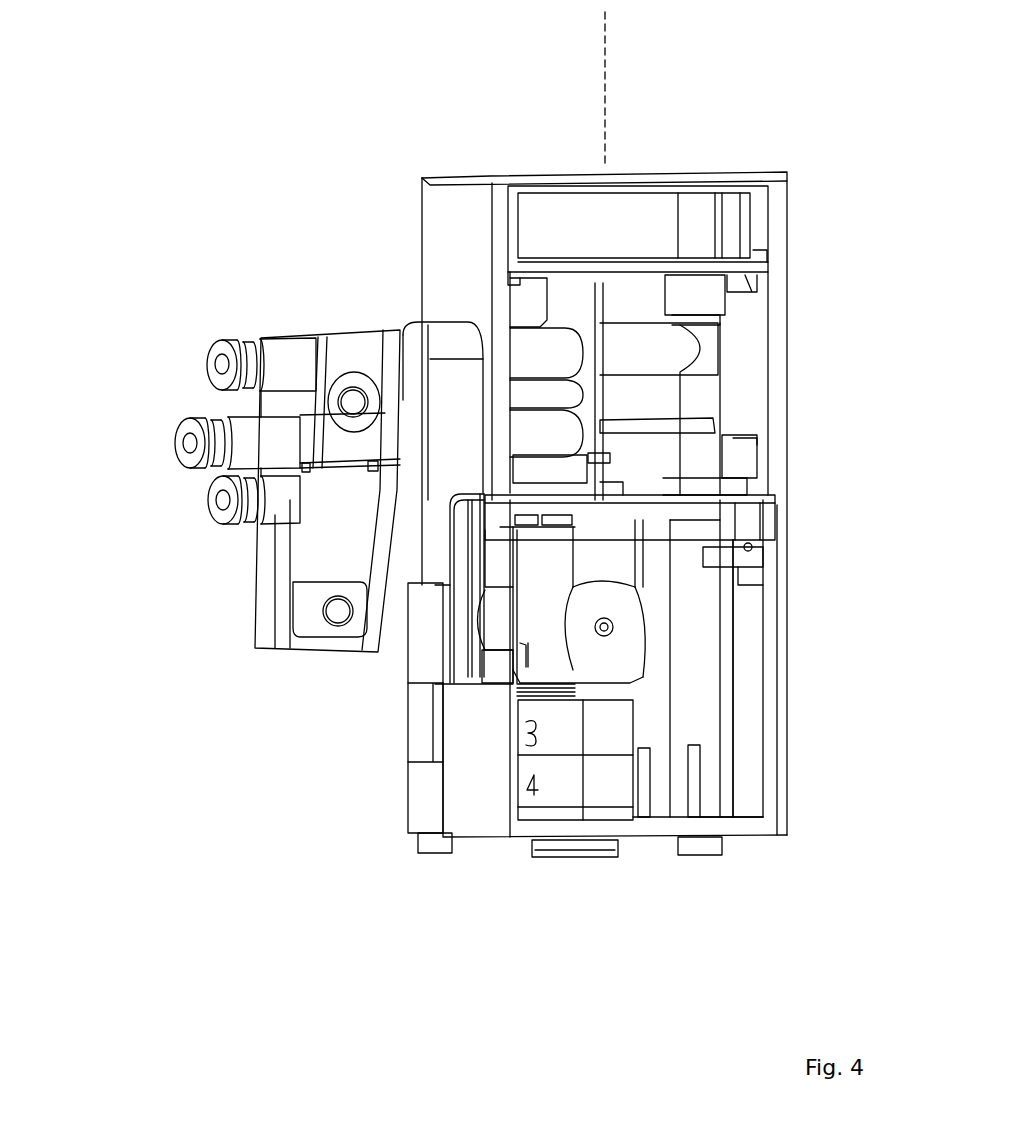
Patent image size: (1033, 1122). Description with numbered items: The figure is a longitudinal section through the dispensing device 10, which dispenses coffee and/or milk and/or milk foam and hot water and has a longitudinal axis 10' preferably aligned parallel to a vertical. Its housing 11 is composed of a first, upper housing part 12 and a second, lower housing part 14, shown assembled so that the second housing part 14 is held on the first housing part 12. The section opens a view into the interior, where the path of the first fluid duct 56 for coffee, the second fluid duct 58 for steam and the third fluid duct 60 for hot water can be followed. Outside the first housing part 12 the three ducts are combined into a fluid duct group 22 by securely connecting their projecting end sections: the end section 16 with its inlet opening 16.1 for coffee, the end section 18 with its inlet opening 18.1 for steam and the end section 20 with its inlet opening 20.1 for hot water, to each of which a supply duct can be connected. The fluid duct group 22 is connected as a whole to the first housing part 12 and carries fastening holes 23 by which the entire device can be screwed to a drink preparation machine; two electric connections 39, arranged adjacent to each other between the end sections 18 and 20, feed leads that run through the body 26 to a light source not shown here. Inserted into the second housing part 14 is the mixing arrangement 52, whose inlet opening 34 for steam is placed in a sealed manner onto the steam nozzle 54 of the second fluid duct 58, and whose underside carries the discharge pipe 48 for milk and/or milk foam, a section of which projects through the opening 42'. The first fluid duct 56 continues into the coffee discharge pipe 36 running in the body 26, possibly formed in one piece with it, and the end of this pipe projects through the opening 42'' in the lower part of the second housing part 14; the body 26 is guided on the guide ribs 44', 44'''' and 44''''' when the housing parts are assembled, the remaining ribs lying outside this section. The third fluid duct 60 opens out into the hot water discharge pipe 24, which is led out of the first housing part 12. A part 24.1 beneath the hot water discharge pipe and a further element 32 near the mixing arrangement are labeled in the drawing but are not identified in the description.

The dispensing device 10 is at (798, 32).
The longitudinal axis 10' is at (633, 88).
The housing 11 is at (778, 577).
The first housing part 12 is at (780, 233).
The second housing part 14 is at (770, 612).
The end section 16 is at (207, 343).
The inlet opening 16.1 is at (214, 368).
The end section 18 is at (177, 427).
The inlet opening 18.1 is at (185, 448).
The end section 20 is at (208, 487).
The inlet opening 20.1 is at (216, 504).
The fluid duct group 22 is at (84, 335).
The fastening holes 23 is at (345, 388).
The hot water discharge pipe 24 is at (414, 845).
The foot 24.1 is at (433, 855).
The body 26 is at (713, 649).
The valve body 32 is at (613, 630).
The inlet opening 34 is at (597, 518).
The coffee discharge pipe 36 is at (695, 847).
The electric connections 39 is at (372, 472).
The opening 42' is at (545, 879).
The opening 42'' is at (770, 862).
The guide rib 44' is at (787, 678).
The guide rib 44'''' is at (658, 846).
The guide rib 44''''' is at (783, 801).
The discharge pipe 48 is at (575, 858).
The mixing arrangement 52 is at (645, 683).
The steam nozzle 54 is at (605, 498).
The first fluid duct 56 is at (518, 355).
The second fluid duct 58 is at (408, 435).
The third fluid duct 60 is at (408, 640).